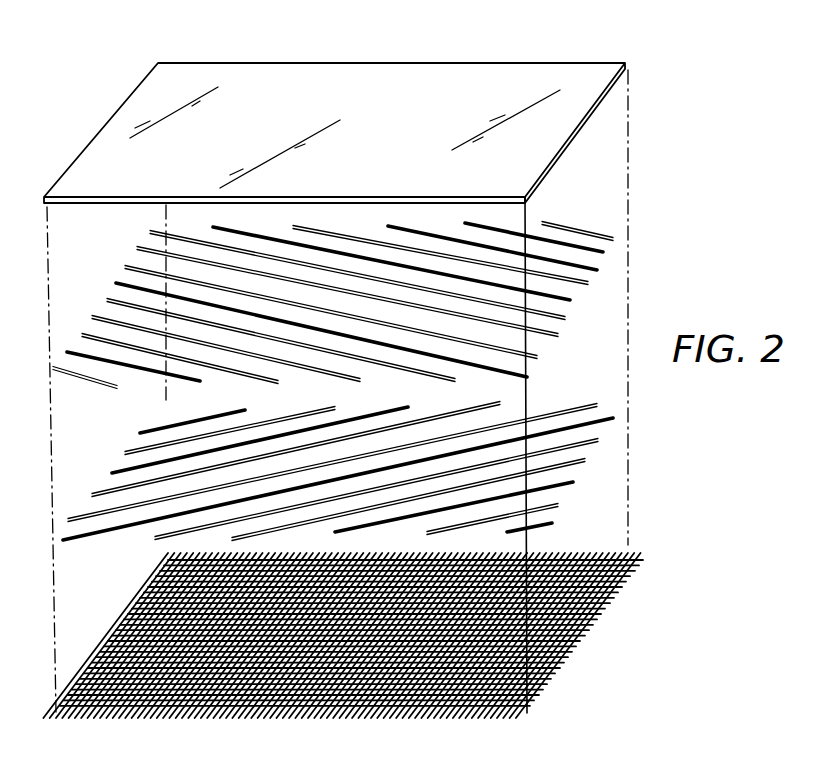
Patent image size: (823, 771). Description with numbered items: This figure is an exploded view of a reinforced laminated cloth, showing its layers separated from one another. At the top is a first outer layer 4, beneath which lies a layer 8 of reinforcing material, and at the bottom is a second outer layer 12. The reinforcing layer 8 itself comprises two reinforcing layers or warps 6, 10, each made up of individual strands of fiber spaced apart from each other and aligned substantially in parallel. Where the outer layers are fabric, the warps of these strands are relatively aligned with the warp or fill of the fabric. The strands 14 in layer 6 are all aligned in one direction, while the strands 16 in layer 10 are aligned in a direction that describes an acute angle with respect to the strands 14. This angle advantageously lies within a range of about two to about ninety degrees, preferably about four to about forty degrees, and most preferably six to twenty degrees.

The first outer layer 4 is at (428, 90).
The reinforcing layer 6 is at (358, 287).
The layer of reinforcing material 8 is at (63, 273).
The reinforcing layer 10 is at (376, 471).
The second outer layer 12 is at (598, 618).
The strands 14 is at (572, 299).
The strands 16 is at (578, 460).